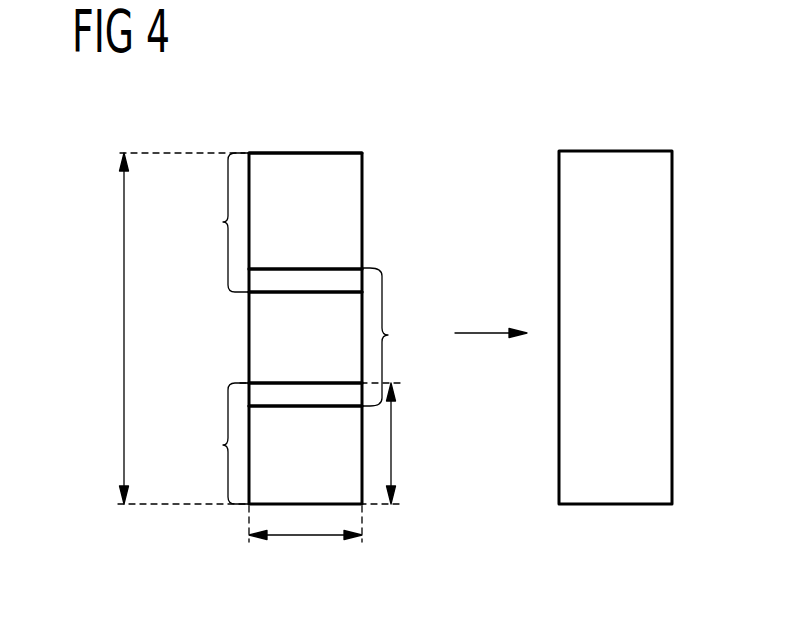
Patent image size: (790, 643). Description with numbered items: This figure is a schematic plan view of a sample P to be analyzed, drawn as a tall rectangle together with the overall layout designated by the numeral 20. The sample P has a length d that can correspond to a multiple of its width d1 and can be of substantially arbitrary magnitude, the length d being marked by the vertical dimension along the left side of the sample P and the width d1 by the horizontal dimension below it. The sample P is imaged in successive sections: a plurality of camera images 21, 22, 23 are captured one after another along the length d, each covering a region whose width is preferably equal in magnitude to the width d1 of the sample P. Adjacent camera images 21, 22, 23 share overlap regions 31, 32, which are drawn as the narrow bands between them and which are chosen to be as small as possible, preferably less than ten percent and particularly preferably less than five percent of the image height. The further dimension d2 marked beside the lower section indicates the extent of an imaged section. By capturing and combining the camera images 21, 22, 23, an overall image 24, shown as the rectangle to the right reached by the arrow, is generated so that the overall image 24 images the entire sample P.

The layer stack 20 is at (342, 120).
The camera image 21 is at (277, 222).
The camera image 22 is at (393, 337).
The camera image 23 is at (275, 443).
The overall image 24 is at (617, 151).
The overlap region 31 is at (305, 274).
The overlap region 32 is at (305, 391).
The sample P is at (290, 159).
The length of the sample d is at (122, 330).
The width of the sample d1 is at (307, 538).
The partial thickness d2 is at (393, 445).